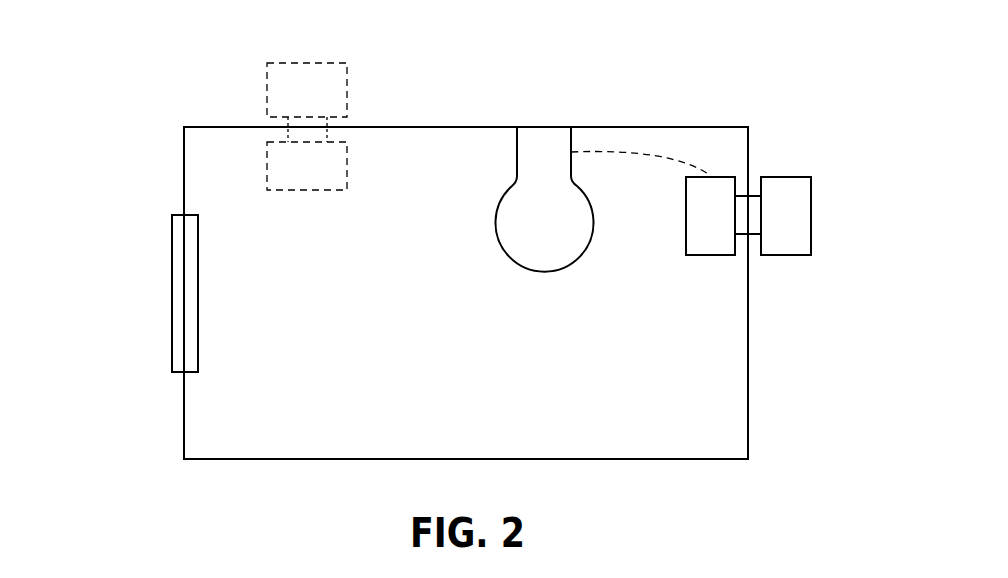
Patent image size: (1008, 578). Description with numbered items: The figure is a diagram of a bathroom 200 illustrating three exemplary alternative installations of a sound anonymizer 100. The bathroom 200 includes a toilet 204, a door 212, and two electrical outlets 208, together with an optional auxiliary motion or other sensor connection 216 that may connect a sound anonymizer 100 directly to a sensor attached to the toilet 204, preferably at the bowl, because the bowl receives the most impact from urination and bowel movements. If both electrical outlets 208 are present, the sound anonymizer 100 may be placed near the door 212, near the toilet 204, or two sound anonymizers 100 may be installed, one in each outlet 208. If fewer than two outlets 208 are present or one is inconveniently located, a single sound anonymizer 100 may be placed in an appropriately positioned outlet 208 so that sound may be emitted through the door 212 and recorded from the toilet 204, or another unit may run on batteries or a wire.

The bathroom 200 is at (90, 131).
The toilet 204 is at (515, 152).
The auxiliary motion or other sensor connection 216 is at (648, 152).
The door 212 is at (172, 292).
The electrical outlets 208 is at (303, 63).
The sound anonymizer 100 is at (350, 157).